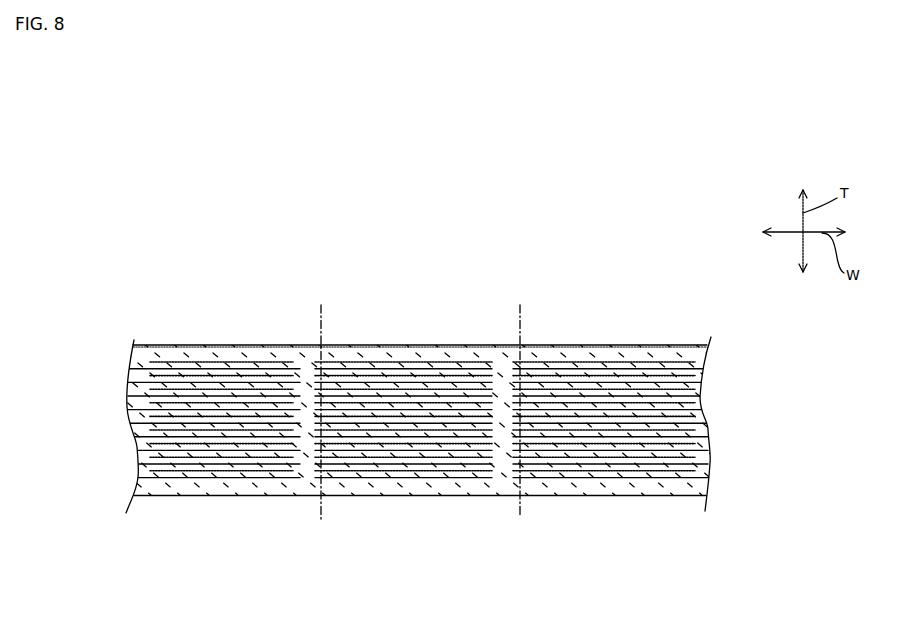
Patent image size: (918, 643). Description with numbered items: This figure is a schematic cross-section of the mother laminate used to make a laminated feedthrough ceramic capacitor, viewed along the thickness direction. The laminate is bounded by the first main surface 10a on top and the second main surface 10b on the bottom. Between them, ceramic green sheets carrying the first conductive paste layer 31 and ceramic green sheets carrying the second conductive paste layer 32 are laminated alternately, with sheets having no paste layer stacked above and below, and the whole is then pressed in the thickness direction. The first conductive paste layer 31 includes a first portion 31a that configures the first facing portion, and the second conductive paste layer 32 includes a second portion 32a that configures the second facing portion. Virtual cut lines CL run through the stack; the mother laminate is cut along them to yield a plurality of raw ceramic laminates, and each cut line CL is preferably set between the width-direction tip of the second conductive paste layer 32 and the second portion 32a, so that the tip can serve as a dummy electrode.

The first main surface 10a is at (397, 345).
The second main surface 10b is at (246, 496).
The first conductive paste layer 31 is at (407, 474).
The first portion 31a is at (367, 475).
The second conductive paste layer 32 is at (483, 466).
The second portion 32a is at (445, 464).
The cut line CL is at (520, 517).